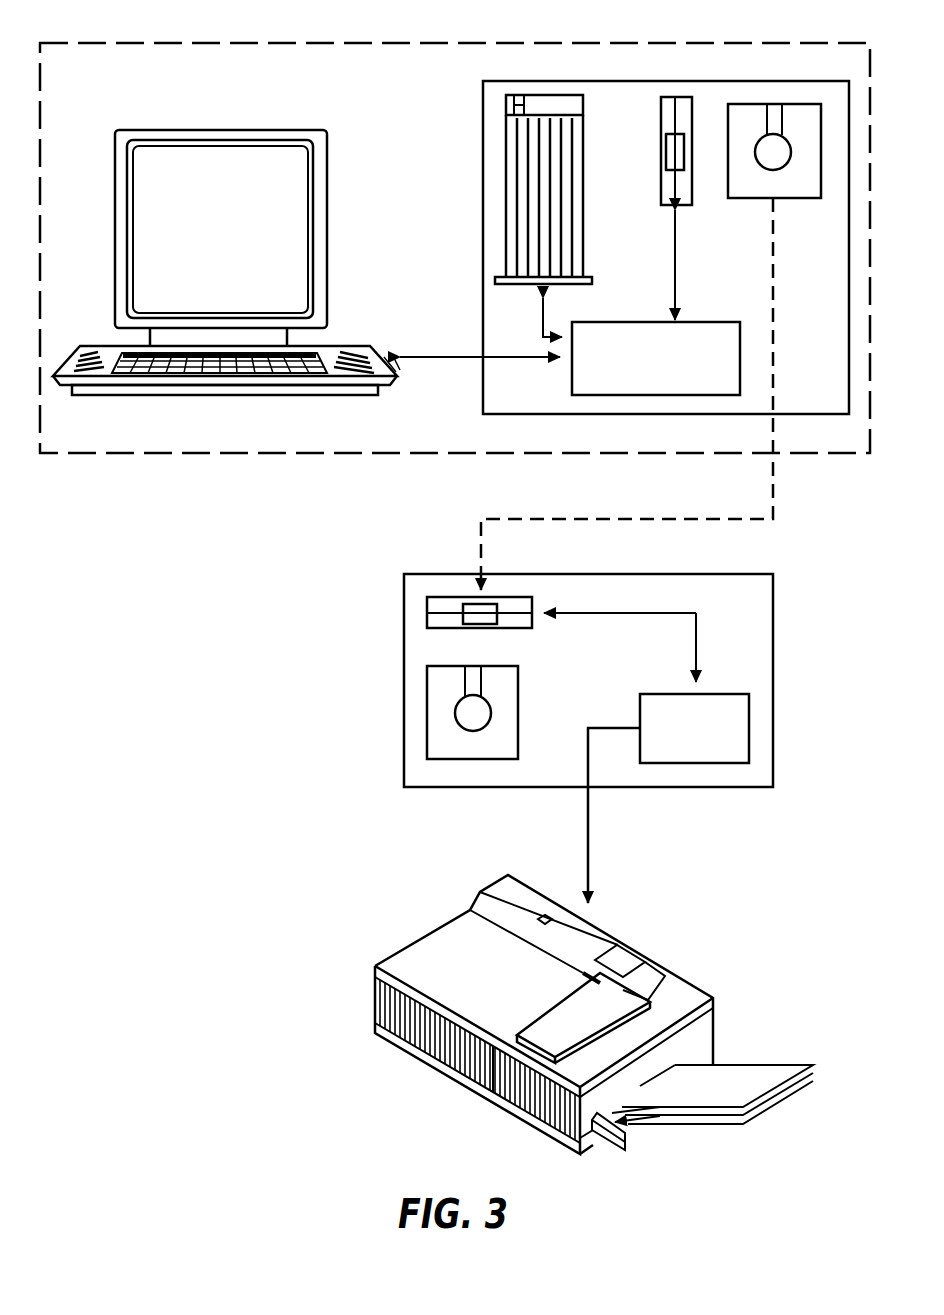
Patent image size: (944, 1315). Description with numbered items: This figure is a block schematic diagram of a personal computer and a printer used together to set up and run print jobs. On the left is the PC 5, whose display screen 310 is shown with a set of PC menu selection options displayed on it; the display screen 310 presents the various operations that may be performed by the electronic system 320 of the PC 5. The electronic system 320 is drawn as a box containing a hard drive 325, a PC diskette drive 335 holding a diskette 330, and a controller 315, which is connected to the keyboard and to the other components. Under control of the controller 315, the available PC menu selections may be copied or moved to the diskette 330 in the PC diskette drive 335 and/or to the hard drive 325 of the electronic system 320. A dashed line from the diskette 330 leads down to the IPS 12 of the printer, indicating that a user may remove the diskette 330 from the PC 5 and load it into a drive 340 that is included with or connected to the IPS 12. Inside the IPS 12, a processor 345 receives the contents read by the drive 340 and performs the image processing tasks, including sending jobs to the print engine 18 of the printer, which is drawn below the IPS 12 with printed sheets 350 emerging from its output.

The PC 5 is at (270, 40).
The display screen 310 is at (262, 153).
The electronic system 320 is at (483, 248).
The hard drive 325 is at (506, 158).
The PC diskette drive 335 is at (661, 170).
The diskette 330 is at (745, 198).
The controller 315 is at (637, 322).
The IPS 12 is at (785, 656).
The drive 340 is at (427, 613).
The processor 345 is at (695, 747).
The print engine 18 is at (416, 921).
The output prints / paper sheets 350 is at (748, 1079).